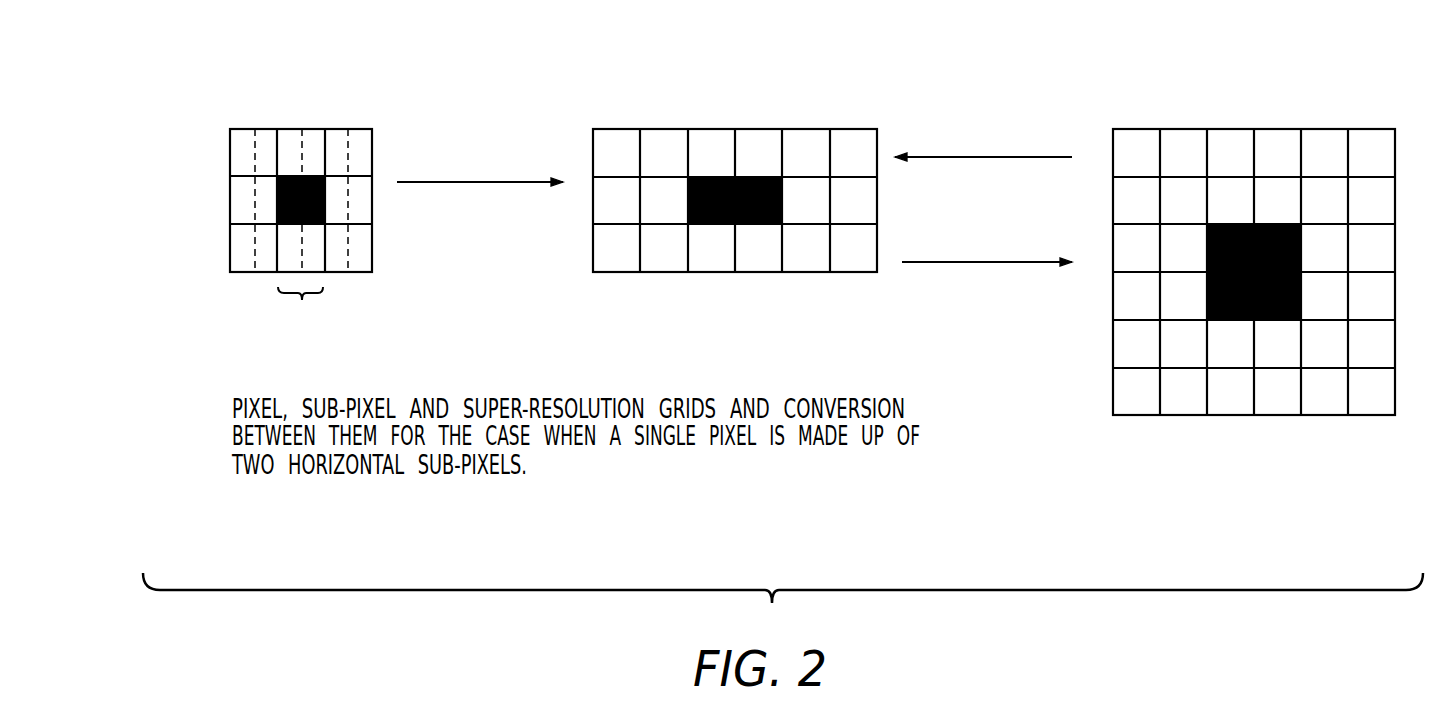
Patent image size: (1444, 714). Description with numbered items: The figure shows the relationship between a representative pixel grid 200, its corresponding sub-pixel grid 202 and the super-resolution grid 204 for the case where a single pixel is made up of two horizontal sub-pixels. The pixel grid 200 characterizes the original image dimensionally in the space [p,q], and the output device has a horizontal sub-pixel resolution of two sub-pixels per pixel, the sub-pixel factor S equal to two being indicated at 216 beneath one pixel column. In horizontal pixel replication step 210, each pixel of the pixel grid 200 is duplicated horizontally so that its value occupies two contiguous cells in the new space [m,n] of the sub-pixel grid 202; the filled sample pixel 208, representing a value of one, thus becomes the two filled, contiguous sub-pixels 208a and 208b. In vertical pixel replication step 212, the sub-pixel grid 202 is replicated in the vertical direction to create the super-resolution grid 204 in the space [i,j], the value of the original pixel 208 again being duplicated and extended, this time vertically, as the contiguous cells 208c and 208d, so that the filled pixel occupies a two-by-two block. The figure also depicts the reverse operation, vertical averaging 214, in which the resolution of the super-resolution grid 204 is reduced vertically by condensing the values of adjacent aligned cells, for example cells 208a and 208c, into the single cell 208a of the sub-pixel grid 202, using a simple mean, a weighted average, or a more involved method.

The pixel grid 200 is at (230, 200).
The sub-pixel grid 202 is at (687, 129).
The super-resolution grid 204 is at (1168, 129).
The sample pixel 208 is at (372, 217).
The sub-pixel 208a is at (712, 225).
The sub-pixel 208b is at (757, 225).
The cell 208c is at (1207, 310).
The cell 208d is at (1301, 297).
The horizontal pixel replication step 210 is at (480, 144).
The vertical pixel replication step 212 is at (987, 277).
The vertical averaging 214 is at (983, 139).
The sub-pixel factor S=2 216 is at (279, 289).